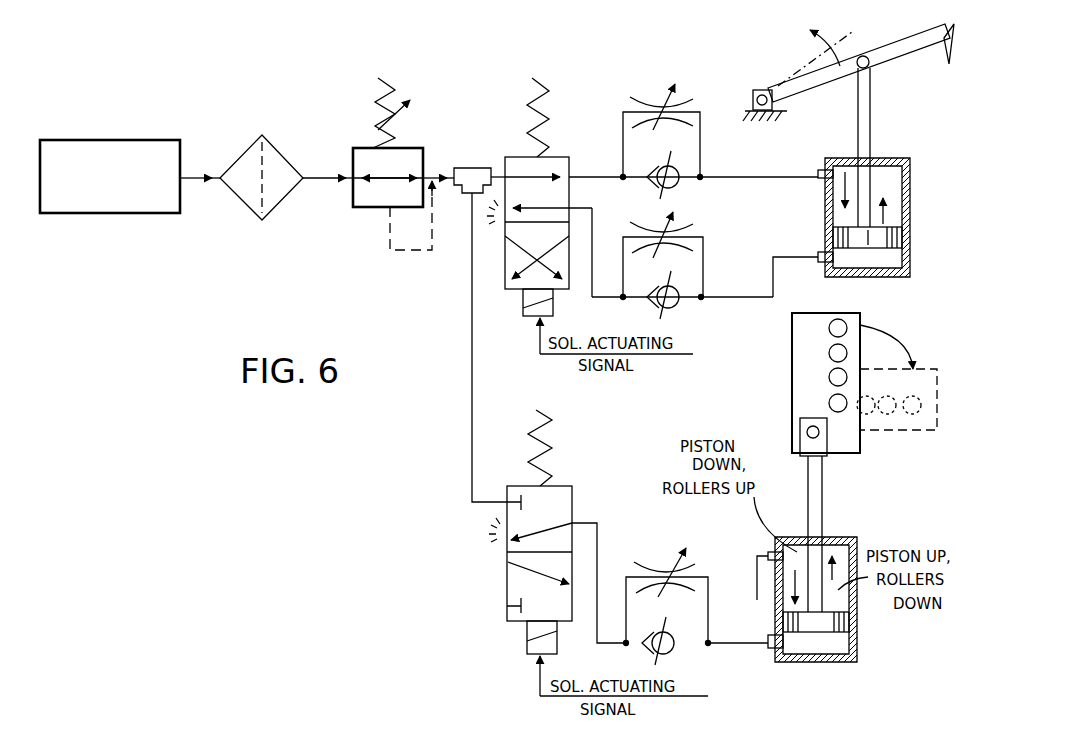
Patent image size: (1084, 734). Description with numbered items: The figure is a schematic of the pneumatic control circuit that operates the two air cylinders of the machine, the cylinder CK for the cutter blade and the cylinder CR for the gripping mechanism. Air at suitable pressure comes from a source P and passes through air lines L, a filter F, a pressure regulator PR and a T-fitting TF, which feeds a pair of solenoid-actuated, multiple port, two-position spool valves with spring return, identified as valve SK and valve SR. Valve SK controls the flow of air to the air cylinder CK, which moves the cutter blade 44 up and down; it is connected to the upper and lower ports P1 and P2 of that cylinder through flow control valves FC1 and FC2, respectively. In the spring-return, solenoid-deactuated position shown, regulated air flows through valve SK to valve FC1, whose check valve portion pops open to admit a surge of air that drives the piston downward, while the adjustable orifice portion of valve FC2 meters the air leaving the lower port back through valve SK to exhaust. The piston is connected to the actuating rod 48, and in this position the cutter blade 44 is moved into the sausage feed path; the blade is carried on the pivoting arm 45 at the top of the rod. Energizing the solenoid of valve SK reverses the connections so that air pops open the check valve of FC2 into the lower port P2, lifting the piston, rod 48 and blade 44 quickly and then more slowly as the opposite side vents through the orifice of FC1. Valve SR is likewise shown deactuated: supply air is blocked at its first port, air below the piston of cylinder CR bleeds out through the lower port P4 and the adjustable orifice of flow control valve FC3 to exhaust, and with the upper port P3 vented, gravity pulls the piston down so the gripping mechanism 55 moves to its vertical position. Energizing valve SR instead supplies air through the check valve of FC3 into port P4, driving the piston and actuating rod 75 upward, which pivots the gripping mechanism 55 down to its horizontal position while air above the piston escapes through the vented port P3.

The source P is at (113, 213).
The filter F is at (280, 196).
The air lines L is at (318, 172).
The pressure regulator PR is at (410, 148).
The T-fitting TF is at (471, 168).
The valve SK is at (539, 197).
The valve SR is at (557, 541).
The flow control valve FC1 is at (662, 128).
The flow control valve FC2 is at (682, 262).
The flow control valve FC3 is at (667, 590).
The air cylinder CK is at (816, 152).
The air cylinder CR is at (838, 537).
The upper port P1 is at (821, 170).
The lower port P2 is at (822, 262).
The upper port P3 is at (770, 550).
The lower port P4 is at (771, 650).
The cutter blade 44 is at (940, 60).
The knife arm lever 45 is at (893, 44).
The actuating rod 48 is at (872, 100).
The gripping mechanism 55 is at (792, 382).
The actuating rod 75 is at (823, 491).